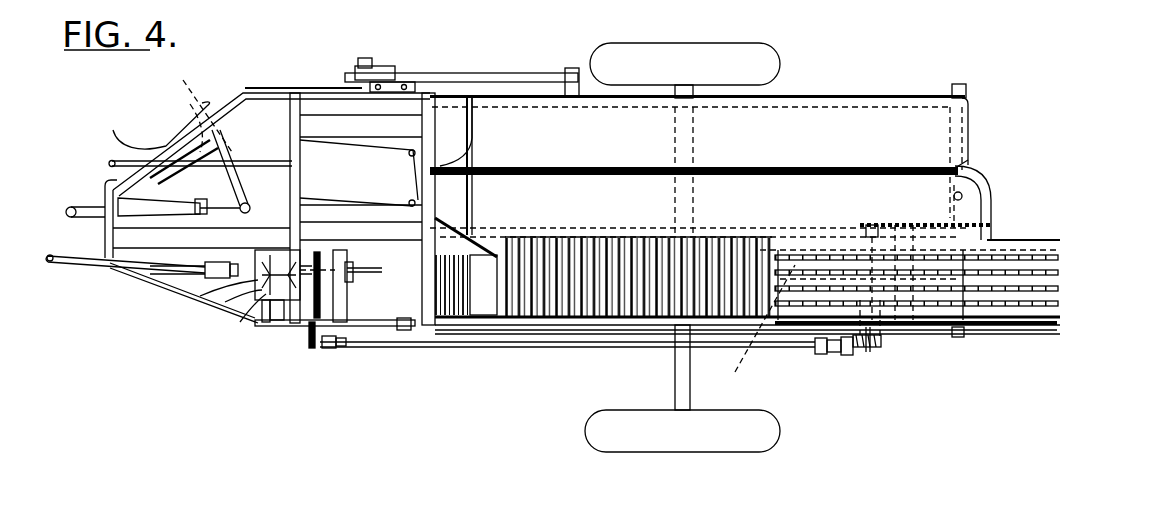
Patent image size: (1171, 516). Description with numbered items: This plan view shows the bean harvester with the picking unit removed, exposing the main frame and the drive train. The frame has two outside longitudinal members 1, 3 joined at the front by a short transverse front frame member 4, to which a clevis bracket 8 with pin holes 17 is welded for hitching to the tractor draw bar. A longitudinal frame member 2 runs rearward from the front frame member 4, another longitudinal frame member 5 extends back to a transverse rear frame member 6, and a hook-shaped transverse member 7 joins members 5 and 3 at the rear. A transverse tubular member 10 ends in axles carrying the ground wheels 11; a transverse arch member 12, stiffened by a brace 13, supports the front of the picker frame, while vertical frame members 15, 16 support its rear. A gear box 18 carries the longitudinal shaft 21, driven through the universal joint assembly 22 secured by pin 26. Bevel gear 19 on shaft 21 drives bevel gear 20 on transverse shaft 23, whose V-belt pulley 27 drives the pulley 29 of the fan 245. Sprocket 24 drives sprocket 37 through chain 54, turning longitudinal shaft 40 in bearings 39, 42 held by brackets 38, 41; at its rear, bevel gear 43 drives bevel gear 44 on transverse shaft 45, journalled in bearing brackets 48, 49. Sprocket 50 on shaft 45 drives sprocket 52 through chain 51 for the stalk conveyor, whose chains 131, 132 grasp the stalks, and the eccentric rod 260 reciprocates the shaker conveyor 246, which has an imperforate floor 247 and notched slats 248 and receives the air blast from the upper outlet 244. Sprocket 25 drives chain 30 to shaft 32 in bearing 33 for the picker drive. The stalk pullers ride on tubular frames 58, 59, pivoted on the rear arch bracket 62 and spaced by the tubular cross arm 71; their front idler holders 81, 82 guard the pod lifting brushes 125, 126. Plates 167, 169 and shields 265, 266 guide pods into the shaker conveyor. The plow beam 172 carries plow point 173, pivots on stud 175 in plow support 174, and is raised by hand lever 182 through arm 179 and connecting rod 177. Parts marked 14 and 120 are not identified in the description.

The outside longitudinal frame member 1 is at (250, 94).
The longitudinal frame member 2 is at (482, 322).
The outside longitudinal frame member 3 is at (165, 300).
The transverse front frame member 4 is at (106, 232).
The longitudinal frame member 5 is at (572, 236).
The transverse rear frame member 6 is at (960, 135).
The hook-shaped transverse member 7 is at (1060, 246).
The clevis bracket 8 is at (82, 224).
The transverse tubular member 10 is at (674, 397).
The ground wheels 11 is at (752, 50).
The transverse arch member 12 is at (436, 208).
The brace 13 is at (142, 270).
The front post 14 is at (289, 125).
The vertical frame members 15 is at (962, 338).
The vertical members 16 is at (968, 88).
The holes 17 is at (70, 208).
The gear box 18 is at (256, 296).
The bevel gear 19 is at (262, 300).
The bevel gear 20 is at (268, 304).
The longitudinal shaft 21 is at (282, 262).
The universal joint assembly 22 is at (60, 266).
The transverse shaft 23 is at (274, 322).
The sprocket 24 is at (300, 336).
The sprocket 25 is at (318, 254).
The pin 26 is at (194, 264).
The V-belt pulley 27 is at (280, 324).
The fan pulley 29 is at (405, 332).
The chain 30 is at (382, 350).
The shaft 32 is at (372, 274).
The bearing 33 is at (354, 284).
The sprocket 37 is at (320, 350).
The bracket 38 is at (348, 336).
The bearing 39 is at (336, 349).
The longitudinal shaft 40 is at (586, 347).
The bracket 41 is at (812, 346).
The bearing 42 is at (845, 356).
The bevel gear 43 is at (850, 349).
The bevel gear 44 is at (870, 354).
The transverse shaft 45 is at (895, 335).
The bearing bracket 48 is at (882, 350).
The bearing bracket 49 is at (856, 233).
The sprocket 50 is at (873, 224).
The chain 51 is at (903, 225).
The sprocket 52 is at (992, 234).
The chain 54 is at (310, 342).
The tubular frame 58 is at (355, 198).
The tubular frame 59 is at (372, 140).
The rear arch bracket 62 is at (440, 160).
The tubular cross arm 71 is at (238, 176).
The front idler holder 81 is at (130, 136).
The front idler holder 82 is at (160, 222).
The rod 120 is at (110, 162).
The pod lifting brush 125 is at (186, 138).
The pod lifting brush 126 is at (168, 182).
The right holder chain 131 is at (972, 168).
The left holder chain 132 is at (978, 192).
The plate 167 is at (866, 136).
The plate 169 is at (962, 192).
The plow beam 172 is at (480, 66).
The plow point 173 is at (200, 110).
The plow support 174 is at (583, 95).
The stud 175 is at (570, 72).
The connecting rod 177 is at (370, 64).
The arm 179 is at (388, 82).
The hand lever 182 is at (304, 87).
The upper outlet 244 is at (497, 290).
The fan 245 is at (456, 322).
The shaker conveyor 246 is at (1040, 328).
The imperforate floor 247 is at (642, 310).
The notched slats 248 is at (1060, 289).
The eccentric rod 260 is at (757, 327).
The sheet metal shield 265 is at (830, 96).
The sheet metal shield 266 is at (1060, 325).